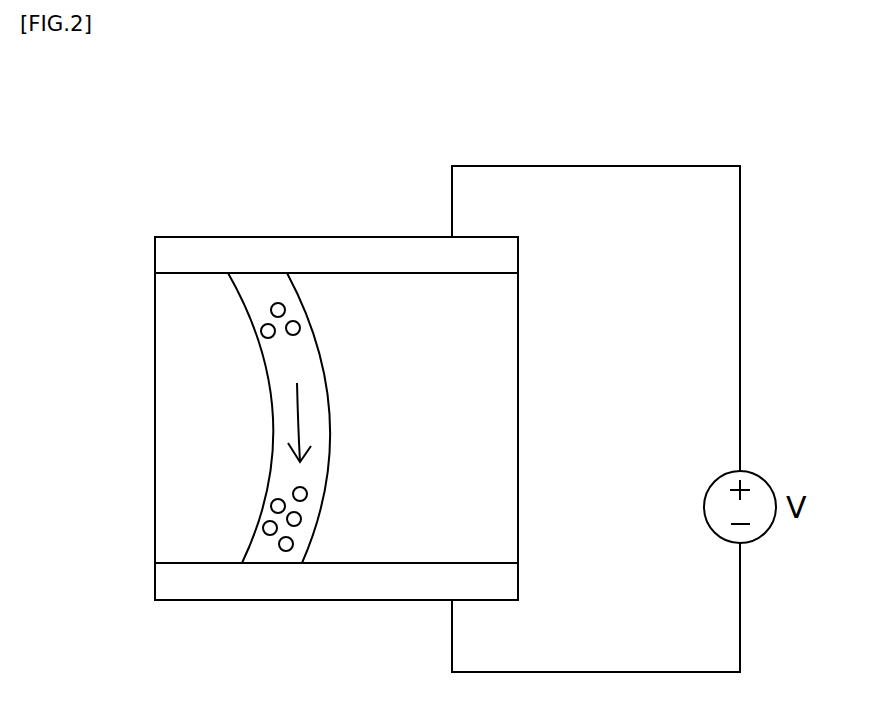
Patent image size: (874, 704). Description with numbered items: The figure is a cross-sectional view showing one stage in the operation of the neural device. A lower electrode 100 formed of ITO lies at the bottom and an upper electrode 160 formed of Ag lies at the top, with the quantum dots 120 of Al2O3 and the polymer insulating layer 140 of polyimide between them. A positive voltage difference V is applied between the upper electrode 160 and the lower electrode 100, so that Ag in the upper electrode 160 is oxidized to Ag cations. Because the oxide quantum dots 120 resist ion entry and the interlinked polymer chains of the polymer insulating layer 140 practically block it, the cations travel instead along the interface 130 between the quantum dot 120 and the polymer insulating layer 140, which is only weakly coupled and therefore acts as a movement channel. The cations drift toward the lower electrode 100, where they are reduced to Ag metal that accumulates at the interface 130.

The lower electrode 100 is at (173, 585).
The quantum dots 120 is at (175, 452).
The interface 130 is at (275, 373).
The polymer insulating layer 140 is at (503, 428).
The upper electrode 160 is at (205, 252).